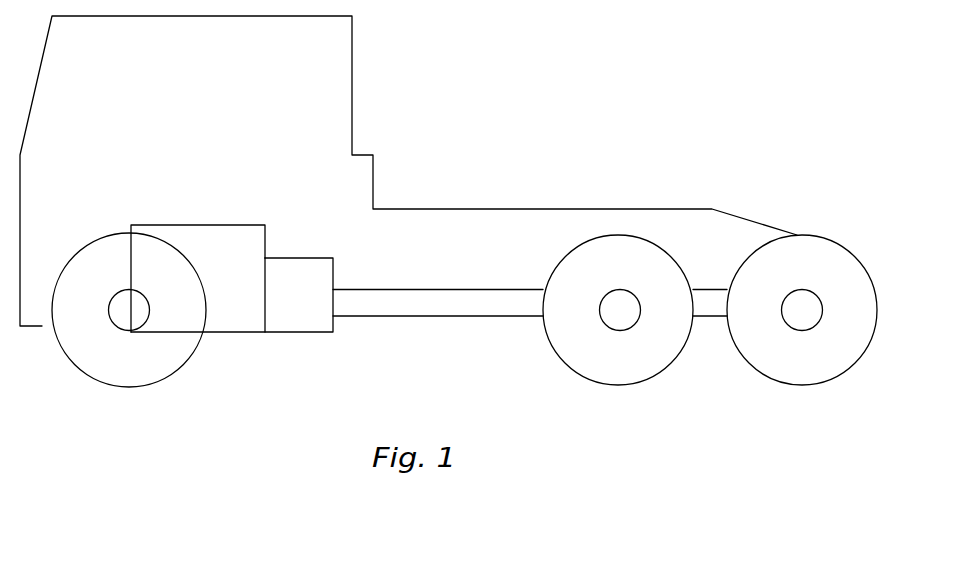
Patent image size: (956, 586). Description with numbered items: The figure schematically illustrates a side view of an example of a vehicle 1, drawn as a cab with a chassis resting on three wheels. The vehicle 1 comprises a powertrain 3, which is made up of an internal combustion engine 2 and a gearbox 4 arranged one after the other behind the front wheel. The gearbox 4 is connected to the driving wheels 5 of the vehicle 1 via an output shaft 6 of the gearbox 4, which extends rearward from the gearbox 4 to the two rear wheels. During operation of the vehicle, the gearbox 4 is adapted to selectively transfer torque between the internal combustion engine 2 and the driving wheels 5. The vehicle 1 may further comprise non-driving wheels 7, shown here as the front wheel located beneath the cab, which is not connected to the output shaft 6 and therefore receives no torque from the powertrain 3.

The vehicle 1 is at (459, 69).
The internal combustion engine 2 is at (153, 225).
The powertrain 3 is at (429, 351).
The gearbox 4 is at (301, 333).
The driving wheels 5 is at (662, 373).
The output shaft 6 is at (385, 304).
The non-driving wheels 7 is at (130, 387).